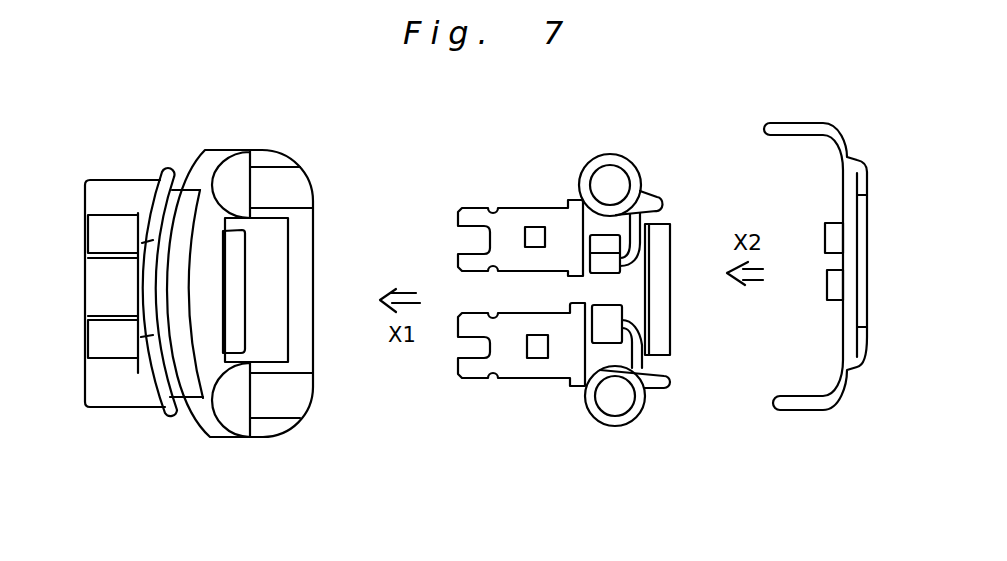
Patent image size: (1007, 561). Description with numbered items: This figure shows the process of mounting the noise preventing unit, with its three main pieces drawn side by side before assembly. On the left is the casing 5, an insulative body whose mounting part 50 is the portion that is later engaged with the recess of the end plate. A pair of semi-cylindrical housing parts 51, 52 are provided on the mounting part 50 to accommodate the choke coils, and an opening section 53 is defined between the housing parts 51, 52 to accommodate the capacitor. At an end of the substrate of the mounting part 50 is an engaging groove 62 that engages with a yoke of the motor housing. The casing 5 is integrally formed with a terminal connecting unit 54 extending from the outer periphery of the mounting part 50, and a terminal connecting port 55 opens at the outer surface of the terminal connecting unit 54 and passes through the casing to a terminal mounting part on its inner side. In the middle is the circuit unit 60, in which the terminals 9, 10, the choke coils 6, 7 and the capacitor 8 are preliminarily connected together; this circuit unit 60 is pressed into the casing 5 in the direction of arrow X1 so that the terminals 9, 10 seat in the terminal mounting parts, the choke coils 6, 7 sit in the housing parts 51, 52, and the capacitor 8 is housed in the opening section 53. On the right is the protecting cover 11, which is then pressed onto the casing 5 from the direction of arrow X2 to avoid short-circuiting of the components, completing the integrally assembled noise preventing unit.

The casing 5 is at (244, 140).
The mounting part 50 is at (263, 152).
The housing part 51 is at (232, 177).
The housing part 52 is at (240, 416).
The opening section 53 is at (270, 263).
The terminal connecting unit 54 is at (107, 179).
The terminal connecting port 55 is at (93, 232).
The engaging groove 62 is at (170, 214).
The circuit unit 60 is at (657, 128).
The terminal 9 is at (522, 208).
The choke coil 6 is at (638, 178).
The terminal 10 is at (518, 381).
The choke coil 7 is at (648, 405).
The capacitor 8 is at (673, 321).
The protecting cover 11 is at (820, 122).